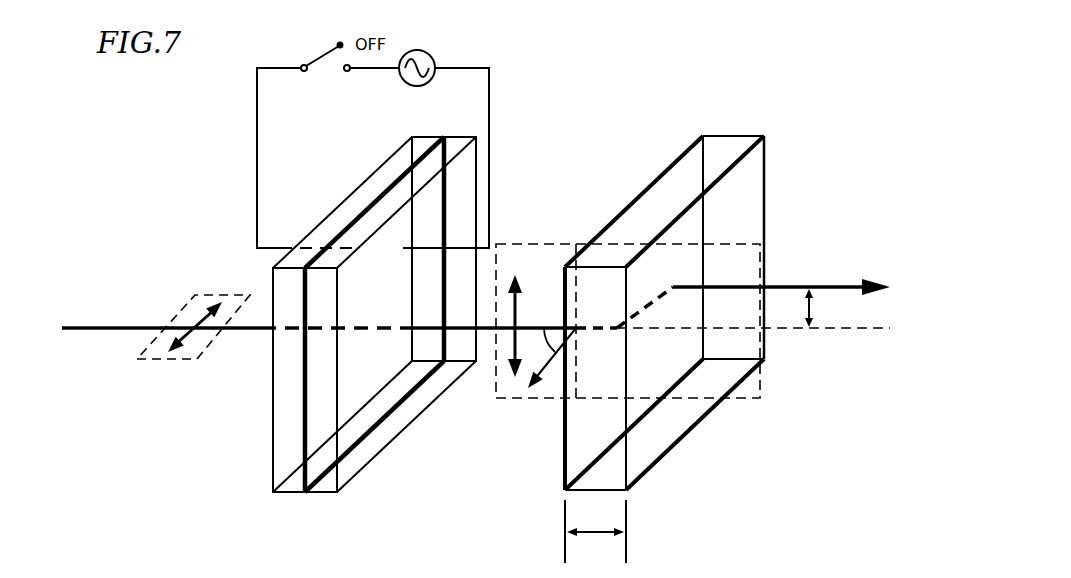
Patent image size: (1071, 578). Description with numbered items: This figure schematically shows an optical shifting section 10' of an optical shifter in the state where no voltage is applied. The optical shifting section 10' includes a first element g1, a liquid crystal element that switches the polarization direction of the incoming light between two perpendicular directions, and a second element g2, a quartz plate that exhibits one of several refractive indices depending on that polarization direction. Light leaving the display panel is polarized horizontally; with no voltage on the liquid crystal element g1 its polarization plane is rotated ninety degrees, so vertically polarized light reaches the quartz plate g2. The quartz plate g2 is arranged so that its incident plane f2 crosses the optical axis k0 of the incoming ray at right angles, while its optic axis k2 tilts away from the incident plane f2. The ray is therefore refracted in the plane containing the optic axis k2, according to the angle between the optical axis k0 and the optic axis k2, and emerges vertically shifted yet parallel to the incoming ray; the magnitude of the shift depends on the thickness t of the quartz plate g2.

The optical shifting section 10' is at (581, 270).
The first element g1 is at (374, 314).
The second element g2 is at (664, 288).
The incident plane f2 is at (667, 168).
The optical axis k0 is at (537, 323).
The optic axis k2 is at (545, 372).
The thickness t is at (595, 532).